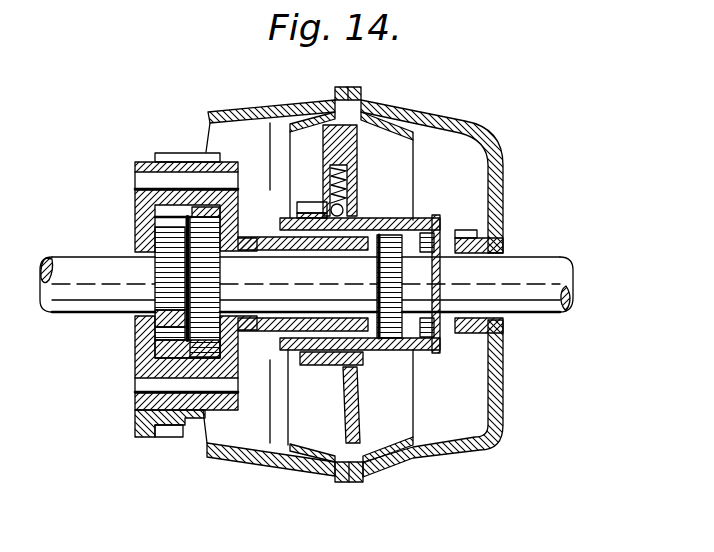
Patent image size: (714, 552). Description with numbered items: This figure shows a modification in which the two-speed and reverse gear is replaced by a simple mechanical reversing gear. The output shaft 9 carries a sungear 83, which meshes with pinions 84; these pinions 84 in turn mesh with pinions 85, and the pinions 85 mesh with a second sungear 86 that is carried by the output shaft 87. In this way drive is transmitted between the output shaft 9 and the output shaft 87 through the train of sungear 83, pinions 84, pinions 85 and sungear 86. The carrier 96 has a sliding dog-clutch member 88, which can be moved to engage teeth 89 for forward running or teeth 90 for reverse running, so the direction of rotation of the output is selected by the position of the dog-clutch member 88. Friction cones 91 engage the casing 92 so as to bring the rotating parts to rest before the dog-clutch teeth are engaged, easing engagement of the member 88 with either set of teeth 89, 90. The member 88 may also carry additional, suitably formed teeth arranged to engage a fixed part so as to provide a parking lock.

The output shaft 9 is at (67, 257).
The sungear 83 is at (157, 318).
The pinions 84 is at (160, 421).
The pinions 85 is at (178, 160).
The sungear 86 is at (222, 272).
The output shaft 87 is at (535, 262).
The sliding dog-clutch member 88 is at (367, 222).
The teeth 89 is at (398, 272).
The teeth 90 is at (467, 232).
The friction cones 91 is at (303, 445).
The casing 92 is at (420, 457).
The carrier 96 is at (242, 207).